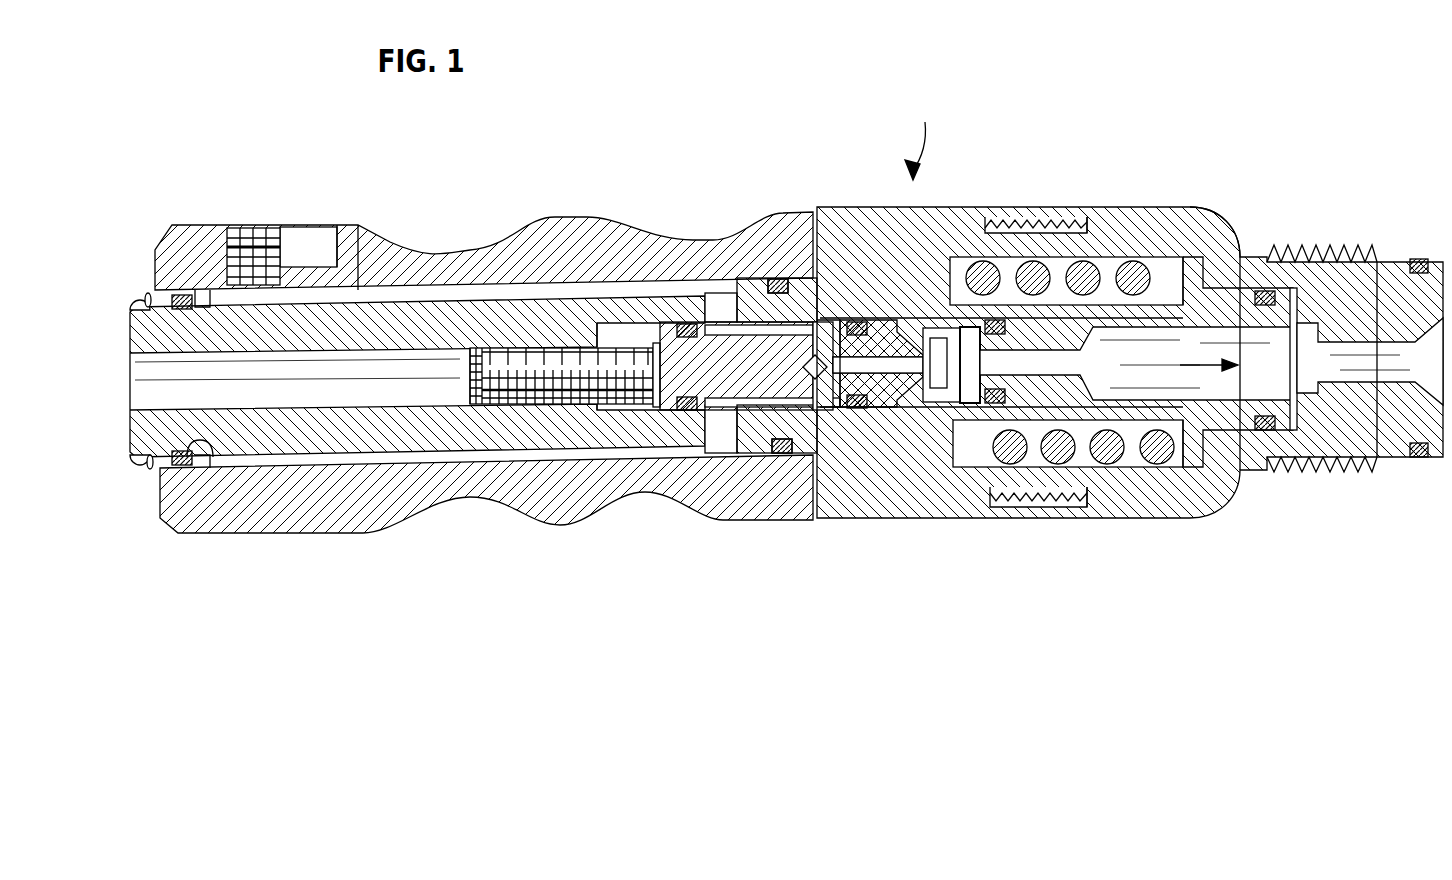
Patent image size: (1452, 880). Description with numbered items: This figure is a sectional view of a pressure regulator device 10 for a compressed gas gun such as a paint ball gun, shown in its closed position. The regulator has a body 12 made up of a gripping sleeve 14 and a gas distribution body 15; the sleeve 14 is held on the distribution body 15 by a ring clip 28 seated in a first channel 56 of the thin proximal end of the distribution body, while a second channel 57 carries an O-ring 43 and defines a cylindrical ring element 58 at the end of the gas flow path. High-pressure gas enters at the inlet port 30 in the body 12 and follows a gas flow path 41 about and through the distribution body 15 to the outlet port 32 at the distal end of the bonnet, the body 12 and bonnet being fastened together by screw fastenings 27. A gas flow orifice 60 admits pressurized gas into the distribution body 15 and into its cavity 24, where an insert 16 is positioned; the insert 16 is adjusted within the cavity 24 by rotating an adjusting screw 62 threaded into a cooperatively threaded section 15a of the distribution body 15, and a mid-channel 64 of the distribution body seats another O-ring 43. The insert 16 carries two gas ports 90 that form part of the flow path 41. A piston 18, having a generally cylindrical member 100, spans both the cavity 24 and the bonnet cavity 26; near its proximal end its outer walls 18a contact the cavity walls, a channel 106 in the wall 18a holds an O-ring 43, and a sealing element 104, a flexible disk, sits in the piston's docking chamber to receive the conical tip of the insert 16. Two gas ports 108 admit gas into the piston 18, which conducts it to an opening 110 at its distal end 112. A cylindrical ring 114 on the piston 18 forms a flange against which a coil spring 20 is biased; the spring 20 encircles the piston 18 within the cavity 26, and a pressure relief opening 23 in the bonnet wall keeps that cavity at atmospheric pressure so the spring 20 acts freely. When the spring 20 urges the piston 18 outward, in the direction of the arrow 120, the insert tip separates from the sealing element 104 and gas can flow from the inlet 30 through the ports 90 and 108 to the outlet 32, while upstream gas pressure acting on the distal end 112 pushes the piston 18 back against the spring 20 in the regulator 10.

The pressure regulator device 10 is at (922, 138).
The body 12 is at (932, 212).
The gripping sleeve 14 is at (622, 243).
The gas distribution body 15 is at (370, 330).
The cooperatively threaded section 15a is at (538, 330).
The insert 16 is at (736, 395).
The piston 18 is at (1220, 440).
The outer walls of piston 18a is at (1127, 300).
The coil spring 20 is at (1152, 300).
The pressure relief opening 23 is at (1135, 470).
The cavity 24 is at (735, 300).
The cavity 26 is at (1100, 300).
The screw fastenings 27 is at (1045, 300).
The ring clip 28 is at (148, 292).
The inlet port 30 is at (292, 228).
The outlet port 32 is at (1441, 260).
The gas flow path 41 is at (432, 288).
The O-ring 43 is at (184, 295).
The first channel 56 is at (132, 300).
The second channel 57 is at (206, 452).
The cylindrical ring element 58 is at (205, 292).
The gas flow orifice 60 is at (762, 278).
The adjusting screw 62 is at (500, 345).
The mid-channel 64 is at (826, 325).
The gas port 90 is at (852, 322).
The generally cylindrical member 100 is at (1236, 330).
The sealing element 104 is at (955, 392).
The channel 106 is at (1037, 470).
The gas port 108 is at (1010, 300).
The opening 110 is at (1326, 460).
The distal end of piston 112 is at (1370, 300).
The cylindrical ring 114 is at (1212, 293).
The arrow 120 is at (1286, 338).